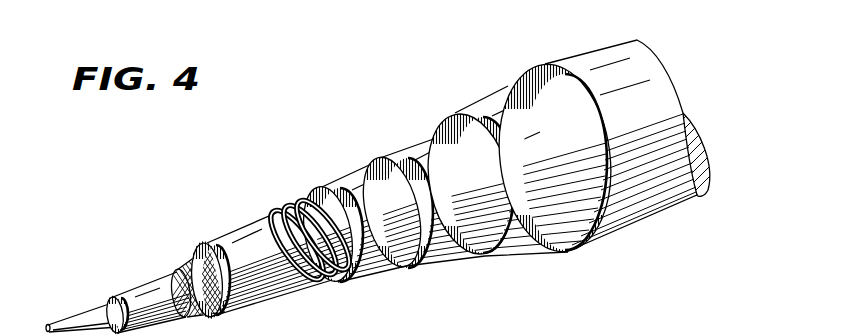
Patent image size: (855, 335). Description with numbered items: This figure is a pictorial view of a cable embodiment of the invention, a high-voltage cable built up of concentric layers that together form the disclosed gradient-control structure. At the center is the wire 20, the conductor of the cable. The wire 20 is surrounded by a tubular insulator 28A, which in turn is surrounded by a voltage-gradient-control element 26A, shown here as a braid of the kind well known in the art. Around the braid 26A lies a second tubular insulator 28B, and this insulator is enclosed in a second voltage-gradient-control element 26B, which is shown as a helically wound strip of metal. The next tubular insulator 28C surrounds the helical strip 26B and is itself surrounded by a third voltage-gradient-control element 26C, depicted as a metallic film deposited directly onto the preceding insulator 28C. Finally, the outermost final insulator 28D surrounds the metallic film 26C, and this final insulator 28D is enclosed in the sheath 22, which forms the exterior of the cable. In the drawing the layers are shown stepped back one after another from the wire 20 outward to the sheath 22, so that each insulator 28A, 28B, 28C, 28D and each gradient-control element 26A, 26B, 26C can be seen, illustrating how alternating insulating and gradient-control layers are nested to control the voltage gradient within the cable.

The wire 20 is at (80, 318).
The tubular insulator 28A is at (137, 286).
The voltage-gradient-control element 26A is at (184, 268).
The tubular insulator 28B is at (258, 228).
The second voltage-gradient-control element 26B is at (291, 206).
The tubular insulator 28C is at (351, 176).
The third voltage-gradient-control element 26C is at (413, 153).
The final insulator 28D is at (488, 104).
The sheath 22 is at (586, 58).